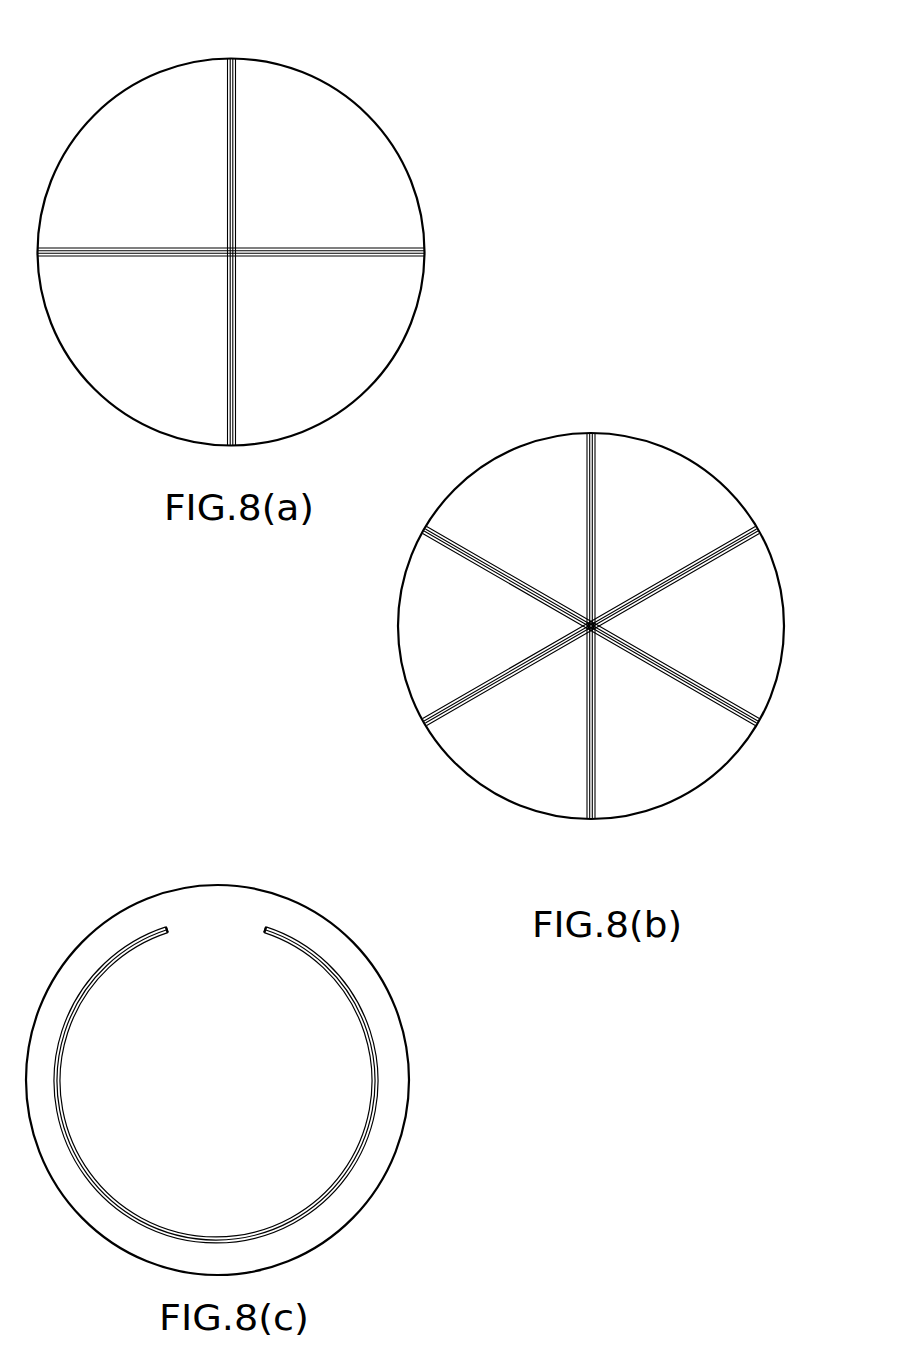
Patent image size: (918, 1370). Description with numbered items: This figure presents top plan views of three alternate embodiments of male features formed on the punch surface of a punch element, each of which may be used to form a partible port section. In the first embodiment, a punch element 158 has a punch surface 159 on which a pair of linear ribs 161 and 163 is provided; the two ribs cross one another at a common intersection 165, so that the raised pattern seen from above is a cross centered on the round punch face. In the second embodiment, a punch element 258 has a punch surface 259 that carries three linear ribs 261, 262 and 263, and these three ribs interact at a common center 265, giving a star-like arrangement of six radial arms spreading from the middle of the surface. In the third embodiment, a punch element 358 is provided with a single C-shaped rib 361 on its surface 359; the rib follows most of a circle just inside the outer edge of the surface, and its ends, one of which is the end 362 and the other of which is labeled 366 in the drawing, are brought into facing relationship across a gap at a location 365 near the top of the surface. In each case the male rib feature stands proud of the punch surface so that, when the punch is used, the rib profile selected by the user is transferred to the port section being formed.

The punch element 158 is at (405, 168).
The punch surface 159 is at (333, 137).
The linear rib 161 is at (236, 90).
The linear rib 163 is at (387, 258).
The common intersection 165 is at (225, 256).
The punch element 258 is at (680, 453).
The punch surface 259 is at (752, 615).
The linear rib 261 is at (722, 710).
The linear rib 262 is at (596, 793).
The linear rib 263 is at (459, 706).
The common center 265 is at (590, 627).
The punch element 358 is at (402, 1135).
The surface 359 is at (313, 1165).
The C-shaped rib 361 is at (340, 985).
The end of rib 362 is at (172, 925).
The location 365 is at (220, 912).
The ring end 366 is at (265, 925).